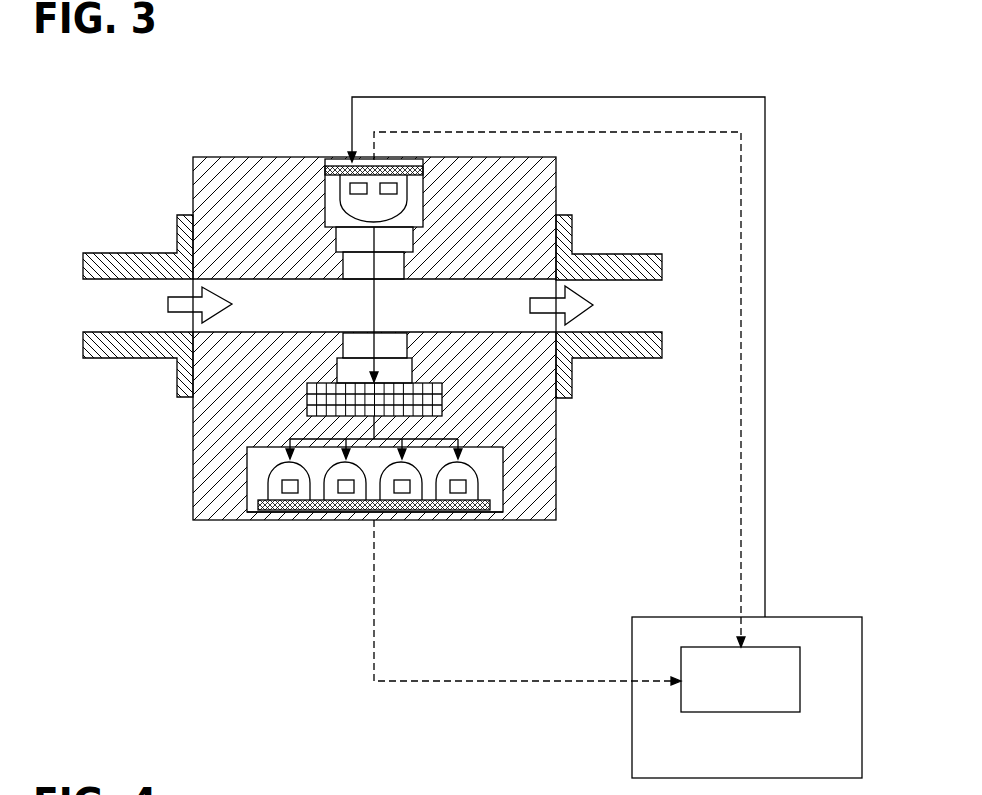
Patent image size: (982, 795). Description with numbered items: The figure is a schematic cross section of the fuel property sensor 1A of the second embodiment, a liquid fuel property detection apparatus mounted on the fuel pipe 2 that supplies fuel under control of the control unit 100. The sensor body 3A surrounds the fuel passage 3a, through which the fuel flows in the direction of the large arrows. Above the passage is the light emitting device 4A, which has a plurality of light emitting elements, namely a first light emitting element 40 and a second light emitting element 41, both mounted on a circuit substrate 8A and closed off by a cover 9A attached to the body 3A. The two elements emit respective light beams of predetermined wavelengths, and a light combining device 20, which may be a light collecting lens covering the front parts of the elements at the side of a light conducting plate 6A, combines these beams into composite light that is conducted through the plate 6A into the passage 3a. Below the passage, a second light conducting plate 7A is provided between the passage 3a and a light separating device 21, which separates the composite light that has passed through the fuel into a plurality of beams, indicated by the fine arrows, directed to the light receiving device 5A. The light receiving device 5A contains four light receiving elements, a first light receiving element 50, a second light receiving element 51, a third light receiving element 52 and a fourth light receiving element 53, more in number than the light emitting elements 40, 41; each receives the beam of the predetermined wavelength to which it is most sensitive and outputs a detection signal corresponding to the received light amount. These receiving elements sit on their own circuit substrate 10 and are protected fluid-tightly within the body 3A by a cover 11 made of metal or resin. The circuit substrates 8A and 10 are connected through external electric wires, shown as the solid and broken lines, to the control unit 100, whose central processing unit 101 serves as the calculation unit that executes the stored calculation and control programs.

The fuel property sensor 1A is at (170, 140).
The fuel pipe 2 is at (137, 253).
The body 3A is at (202, 177).
The passage 3a is at (275, 320).
The light emitting device 4A is at (413, 193).
The light receiving device 5A is at (438, 523).
The light conducting plate 6A is at (393, 267).
The light conducting plate 7A is at (398, 345).
The circuit substrate 8A is at (438, 149).
The cover 9A is at (333, 157).
The light combining device 20 is at (325, 212).
The light separating device 21 is at (442, 400).
The first light emitting element 40 is at (352, 190).
The second light emitting element 41 is at (388, 182).
The circuit substrate 10 is at (260, 508).
The cover 11 is at (282, 504).
The first light receiving element 50 is at (290, 492).
The second light receiving element 51 is at (345, 492).
The third light receiving element 52 is at (402, 492).
The fourth light receiving element 53 is at (457, 492).
The control unit 100 is at (748, 657).
The central processing unit 101 is at (775, 647).